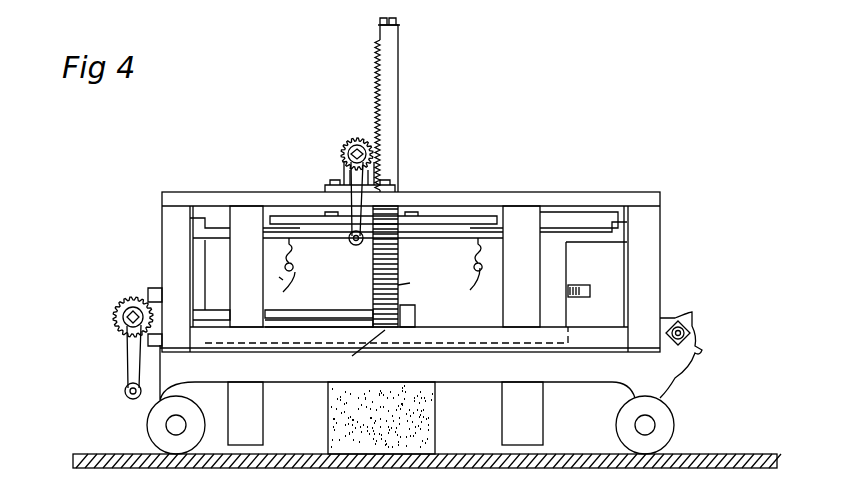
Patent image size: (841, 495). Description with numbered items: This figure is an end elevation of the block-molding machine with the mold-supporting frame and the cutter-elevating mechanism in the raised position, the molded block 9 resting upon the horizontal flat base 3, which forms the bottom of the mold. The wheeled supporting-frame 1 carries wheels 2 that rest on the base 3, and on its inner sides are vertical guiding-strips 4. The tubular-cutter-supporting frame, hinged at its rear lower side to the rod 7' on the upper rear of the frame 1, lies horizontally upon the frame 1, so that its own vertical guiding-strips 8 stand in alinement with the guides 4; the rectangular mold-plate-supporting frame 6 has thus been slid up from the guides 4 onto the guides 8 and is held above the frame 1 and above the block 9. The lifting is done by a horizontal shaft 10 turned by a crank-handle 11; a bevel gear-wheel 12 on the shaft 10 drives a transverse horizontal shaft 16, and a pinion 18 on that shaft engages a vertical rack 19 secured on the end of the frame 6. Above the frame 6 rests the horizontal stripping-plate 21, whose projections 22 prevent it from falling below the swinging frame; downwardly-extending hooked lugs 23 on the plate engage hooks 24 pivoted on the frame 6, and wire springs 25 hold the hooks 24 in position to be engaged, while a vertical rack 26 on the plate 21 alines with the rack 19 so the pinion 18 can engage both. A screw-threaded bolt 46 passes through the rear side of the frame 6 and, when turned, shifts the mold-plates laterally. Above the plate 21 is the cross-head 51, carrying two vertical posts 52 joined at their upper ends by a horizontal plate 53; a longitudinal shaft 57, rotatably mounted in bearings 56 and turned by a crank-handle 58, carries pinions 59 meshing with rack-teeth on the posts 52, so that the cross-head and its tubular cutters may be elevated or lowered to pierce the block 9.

The wheeled supporting-frame 1 is at (410, 363).
The wheels 2 is at (147, 427).
The horizontal flat base 3 is at (473, 454).
The vertical guiding-strips 4 is at (385, 413).
The mold-plate-supporting frame 6 is at (411, 272).
The horizontal longitudinally-disposed rod 7' is at (692, 355).
The vertical guiding-strips 8 is at (385, 266).
The molded block 9 is at (390, 384).
The horizontal shaft 10 is at (122, 318).
The crank-handle 11 is at (126, 352).
The bevel gear-wheel 12 is at (118, 300).
The transverse horizontal shaft 16 is at (340, 308).
The pinion 18 is at (357, 352).
The vertical rack 19 is at (415, 284).
The stripping-plate 21 is at (579, 218).
The projections 22 is at (407, 266).
The hooked lugs 23 is at (395, 223).
The hooks 24 is at (295, 265).
The wire springs 25 is at (379, 288).
The vertical rack 26 is at (398, 240).
The screw-threaded bolt 46 is at (580, 287).
The cross-head 51 is at (432, 216).
The vertical posts 52 is at (399, 72).
The horizontal plate 53 is at (398, 31).
The bearings 56 is at (340, 187).
The longitudinal horizontal shaft 57 is at (341, 156).
The crank-handle 58 is at (362, 176).
The pinions 59 is at (354, 140).